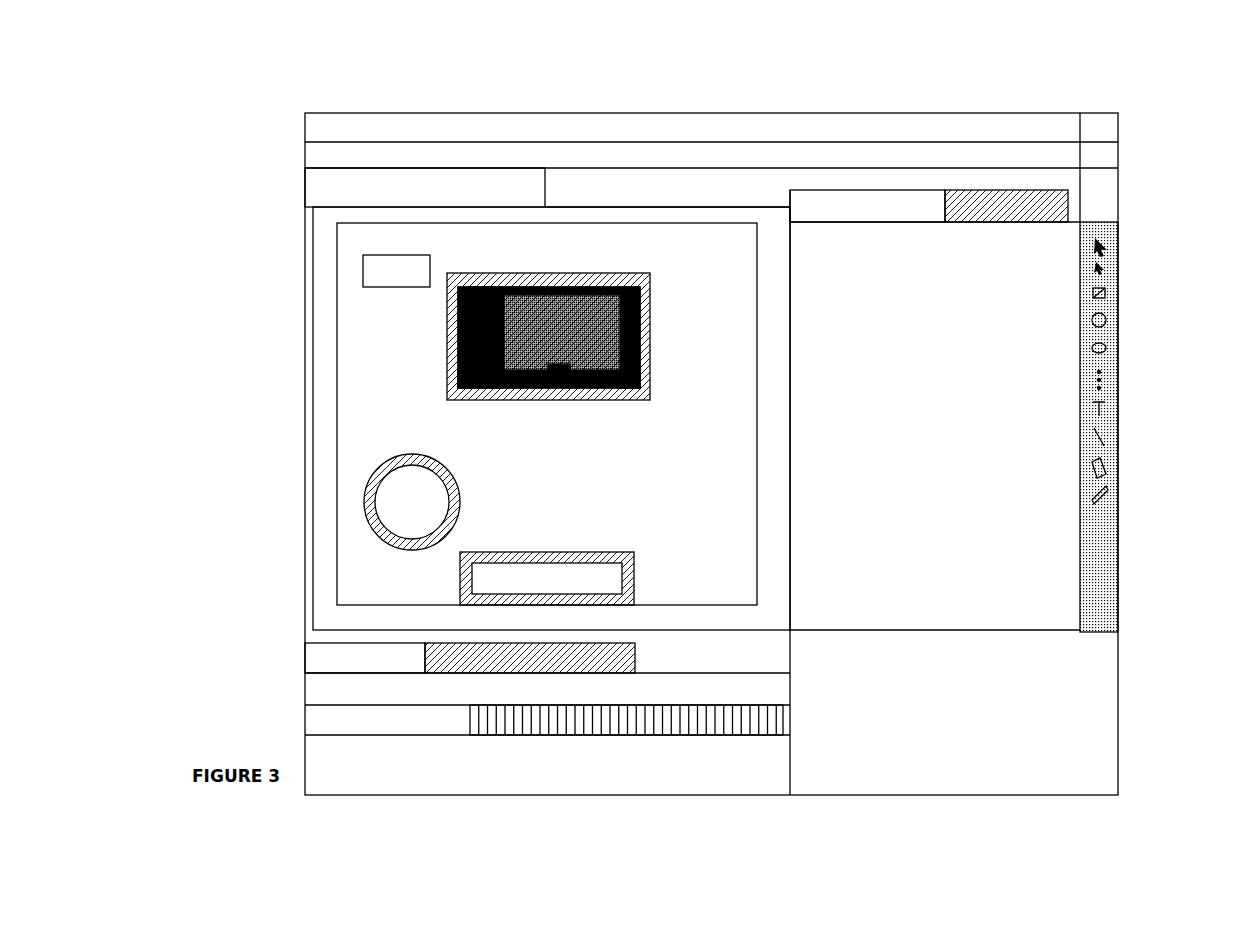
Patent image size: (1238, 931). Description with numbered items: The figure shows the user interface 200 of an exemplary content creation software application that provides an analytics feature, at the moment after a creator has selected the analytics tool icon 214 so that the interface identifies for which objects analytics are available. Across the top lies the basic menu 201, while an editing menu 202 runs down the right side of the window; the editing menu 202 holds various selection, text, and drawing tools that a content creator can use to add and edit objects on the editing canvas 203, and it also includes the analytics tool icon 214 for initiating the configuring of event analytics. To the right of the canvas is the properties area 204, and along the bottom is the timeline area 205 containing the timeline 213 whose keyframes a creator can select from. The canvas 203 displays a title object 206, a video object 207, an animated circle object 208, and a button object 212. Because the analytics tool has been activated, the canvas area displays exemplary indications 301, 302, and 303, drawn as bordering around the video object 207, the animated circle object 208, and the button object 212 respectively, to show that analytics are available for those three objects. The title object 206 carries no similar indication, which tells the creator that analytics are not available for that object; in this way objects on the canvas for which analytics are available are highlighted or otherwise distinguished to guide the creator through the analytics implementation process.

The user interface 200 is at (510, 112).
The basic menu 201 is at (305, 158).
The editing menu 202 is at (1080, 222).
The editing canvas 203 is at (305, 190).
The properties area 204 is at (872, 190).
The timeline area 205 is at (337, 243).
The title object 206 is at (363, 276).
The video object 207 is at (447, 323).
The animated circle object 208 is at (365, 510).
The button object 212 is at (460, 592).
The timeline 213 is at (305, 715).
The analytics tool icon 214 is at (1120, 545).
The indication 301 is at (447, 370).
The indication 302 is at (365, 478).
The indication 303 is at (460, 560).